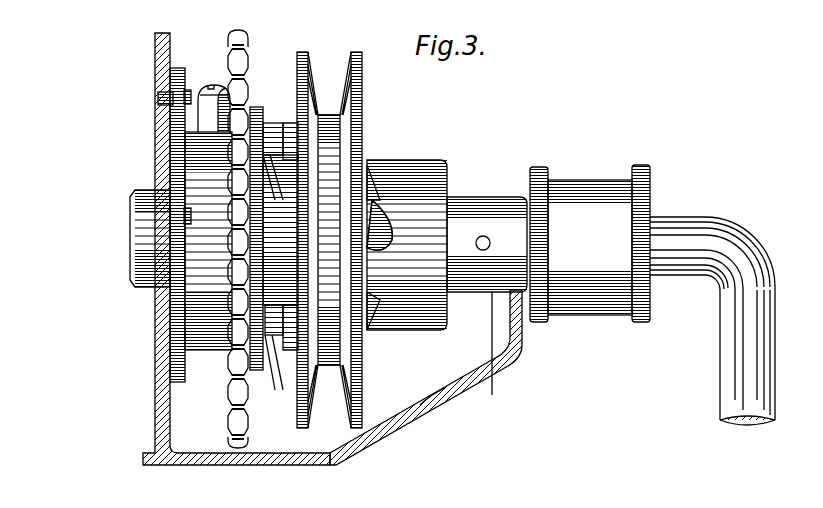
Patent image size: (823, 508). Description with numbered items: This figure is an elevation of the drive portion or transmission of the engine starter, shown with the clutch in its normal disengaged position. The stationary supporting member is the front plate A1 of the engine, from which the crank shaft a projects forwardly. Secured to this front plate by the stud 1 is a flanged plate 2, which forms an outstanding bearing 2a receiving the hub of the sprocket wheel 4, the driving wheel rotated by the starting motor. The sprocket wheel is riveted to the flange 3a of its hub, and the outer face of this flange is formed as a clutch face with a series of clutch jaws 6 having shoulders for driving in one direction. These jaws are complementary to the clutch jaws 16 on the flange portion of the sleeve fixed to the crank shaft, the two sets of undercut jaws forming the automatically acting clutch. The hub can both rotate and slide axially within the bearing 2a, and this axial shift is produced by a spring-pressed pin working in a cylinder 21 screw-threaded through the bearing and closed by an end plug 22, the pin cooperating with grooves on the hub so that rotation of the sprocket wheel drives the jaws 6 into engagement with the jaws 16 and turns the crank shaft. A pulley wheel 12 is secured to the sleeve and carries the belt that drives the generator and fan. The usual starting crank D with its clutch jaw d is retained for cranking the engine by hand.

The front plate A1 is at (166, 68).
The stud 1 is at (163, 99).
The crank shaft a is at (150, 238).
The flanged plate 2 is at (181, 70).
The bearing 2a is at (208, 241).
The cylinder 21 is at (214, 108).
The end plug 22 is at (207, 86).
The sprocket wheel 4 is at (246, 62).
The flange of the hub portion 3a is at (257, 107).
The clutch jaws 16 is at (295, 240).
The clutch jaws 6 is at (271, 152).
The pulley wheel 12 is at (360, 127).
The clutch jaw d is at (447, 277).
The starting crank D is at (690, 228).